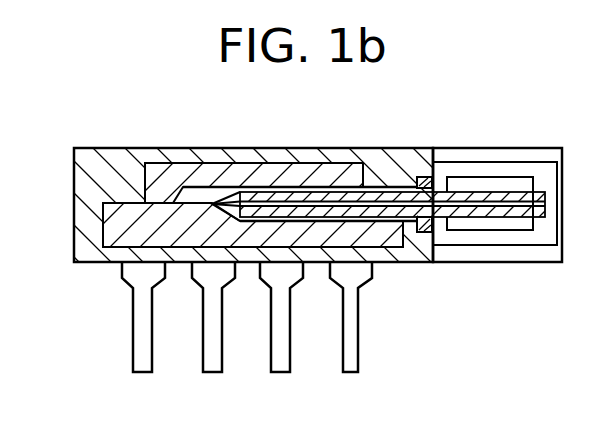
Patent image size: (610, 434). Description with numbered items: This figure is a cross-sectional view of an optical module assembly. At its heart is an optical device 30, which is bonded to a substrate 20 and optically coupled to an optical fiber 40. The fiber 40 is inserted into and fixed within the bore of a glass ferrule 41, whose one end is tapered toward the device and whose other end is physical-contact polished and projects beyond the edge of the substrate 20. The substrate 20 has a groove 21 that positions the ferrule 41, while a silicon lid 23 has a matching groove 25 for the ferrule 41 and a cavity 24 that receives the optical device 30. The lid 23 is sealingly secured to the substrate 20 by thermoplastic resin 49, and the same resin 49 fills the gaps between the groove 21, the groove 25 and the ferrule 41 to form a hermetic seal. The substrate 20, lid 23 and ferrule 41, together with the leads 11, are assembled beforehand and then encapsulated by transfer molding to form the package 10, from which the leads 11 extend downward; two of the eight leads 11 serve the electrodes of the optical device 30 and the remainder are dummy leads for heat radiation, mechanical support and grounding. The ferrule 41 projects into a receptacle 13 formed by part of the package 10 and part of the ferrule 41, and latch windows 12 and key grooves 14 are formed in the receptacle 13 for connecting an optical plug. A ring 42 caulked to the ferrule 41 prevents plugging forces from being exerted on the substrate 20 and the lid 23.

The package 10 is at (387, 158).
The leads 11 is at (366, 264).
The latch windows 12 is at (460, 183).
The receptacle 13 is at (498, 172).
The key grooves 14 is at (542, 157).
The substrate 20 is at (184, 258).
The groove 21 is at (246, 258).
The lid 23 is at (218, 170).
The cavity 24 is at (249, 187).
The groove 25 is at (305, 190).
The optical device 30 is at (195, 183).
The optical fiber 40 is at (518, 216).
The ferrule 41 is at (497, 231).
The ring 42 is at (432, 230).
The thermoplastic resin 49 is at (316, 255).